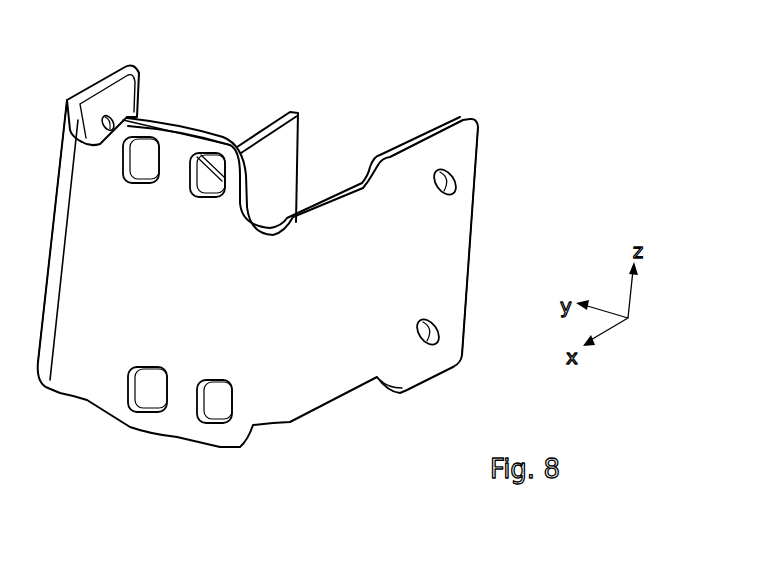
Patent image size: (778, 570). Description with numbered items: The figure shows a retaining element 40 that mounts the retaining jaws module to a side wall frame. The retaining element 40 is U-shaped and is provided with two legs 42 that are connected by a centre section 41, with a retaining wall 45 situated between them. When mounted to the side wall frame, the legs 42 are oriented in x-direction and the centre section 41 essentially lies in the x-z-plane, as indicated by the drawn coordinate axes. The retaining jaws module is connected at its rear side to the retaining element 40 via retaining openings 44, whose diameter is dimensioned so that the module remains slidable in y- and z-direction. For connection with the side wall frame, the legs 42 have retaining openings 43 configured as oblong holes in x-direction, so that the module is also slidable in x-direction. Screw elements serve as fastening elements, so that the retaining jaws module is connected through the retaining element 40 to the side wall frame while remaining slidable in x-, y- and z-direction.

The retaining element 40 is at (553, 155).
The centre section 41 is at (154, 300).
The legs 42 is at (137, 92).
The retaining openings 43 is at (112, 118).
The retaining openings 44 is at (143, 153).
The retaining wall 45 is at (284, 153).